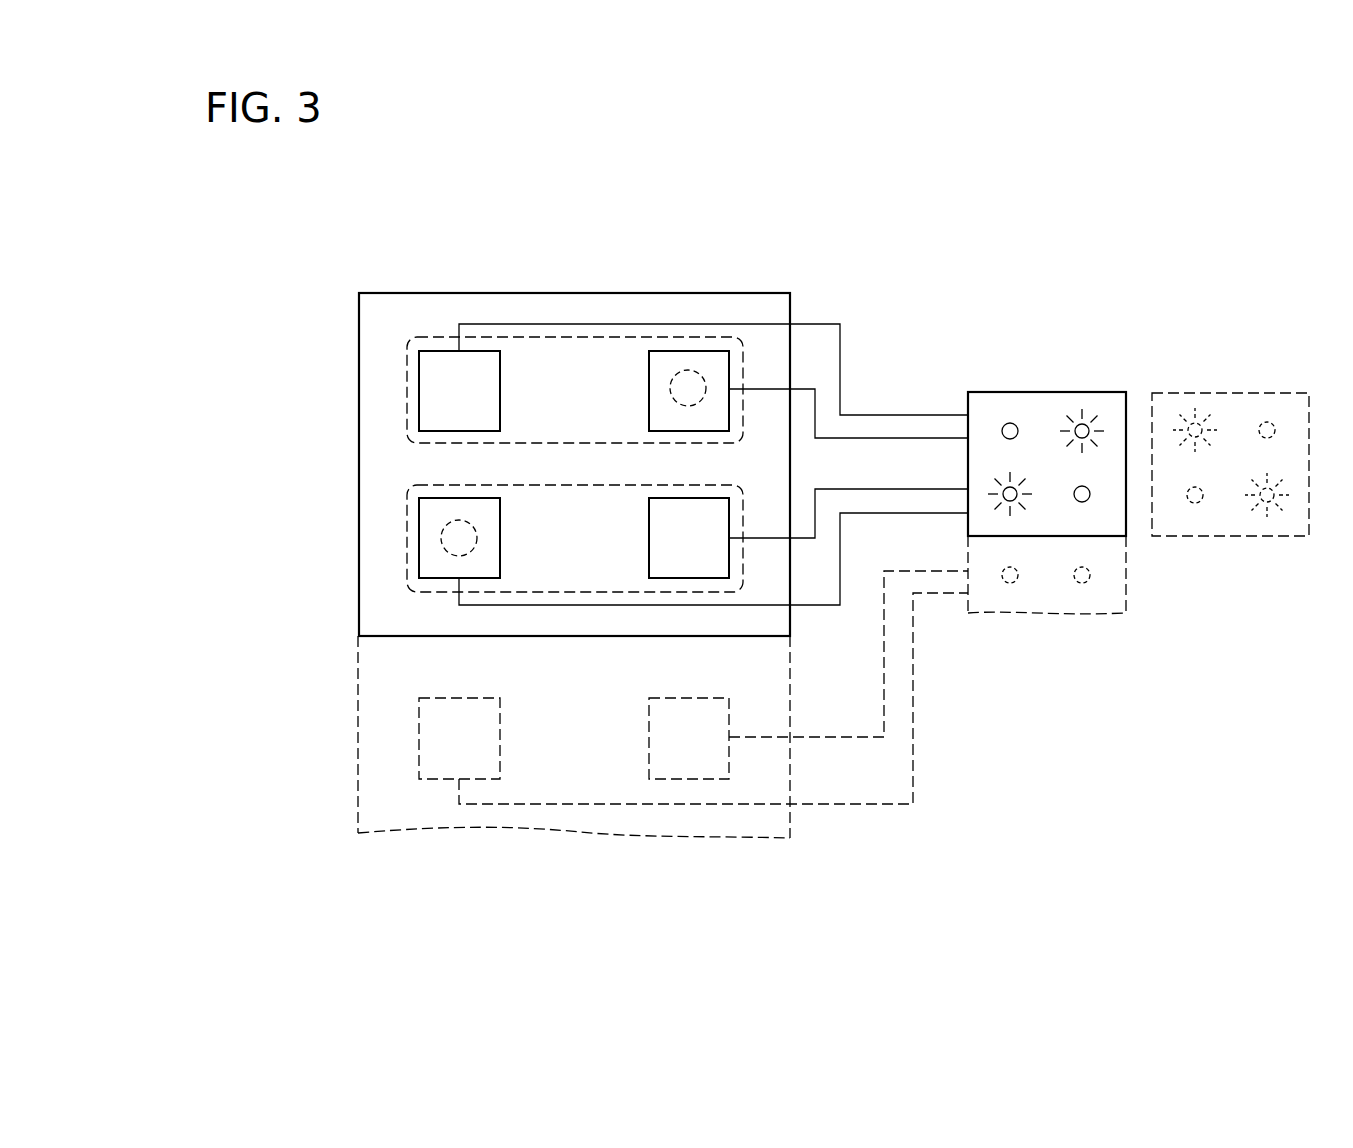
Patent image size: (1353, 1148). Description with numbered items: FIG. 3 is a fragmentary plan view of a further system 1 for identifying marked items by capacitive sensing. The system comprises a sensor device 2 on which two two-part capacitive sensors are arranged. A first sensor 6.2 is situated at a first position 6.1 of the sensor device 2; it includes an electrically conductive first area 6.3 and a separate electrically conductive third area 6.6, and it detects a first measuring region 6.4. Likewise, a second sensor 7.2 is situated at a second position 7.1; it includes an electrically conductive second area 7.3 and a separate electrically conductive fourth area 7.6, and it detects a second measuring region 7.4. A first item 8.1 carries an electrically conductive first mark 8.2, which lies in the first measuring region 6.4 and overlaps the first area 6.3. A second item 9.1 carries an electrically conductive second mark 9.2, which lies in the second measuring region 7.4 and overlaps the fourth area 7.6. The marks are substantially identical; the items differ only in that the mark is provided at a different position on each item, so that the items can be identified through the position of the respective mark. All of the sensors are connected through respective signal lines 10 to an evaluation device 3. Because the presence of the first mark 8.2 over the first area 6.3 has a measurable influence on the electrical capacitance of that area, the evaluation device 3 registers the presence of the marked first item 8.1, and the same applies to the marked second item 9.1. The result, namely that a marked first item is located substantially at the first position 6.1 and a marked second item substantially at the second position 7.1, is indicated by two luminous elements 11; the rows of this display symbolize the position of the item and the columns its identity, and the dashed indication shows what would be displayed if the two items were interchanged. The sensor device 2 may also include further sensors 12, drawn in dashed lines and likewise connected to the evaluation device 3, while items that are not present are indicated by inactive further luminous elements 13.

The sensor system 1 is at (1172, 253).
The sensor device 2 is at (790, 312).
The evaluation device 3 is at (1227, 400).
The first position 6.1 is at (443, 288).
The first sensor 6.2 is at (443, 288).
The first area 6.3 is at (419, 390).
The first measuring region 6.4 is at (443, 288).
The third area 6.6 is at (649, 368).
The second position 7.1 is at (582, 628).
The second sensor 7.2 is at (582, 628).
The second area 7.3 is at (419, 522).
The second measuring region 7.4 is at (582, 628).
The fourth area 7.6 is at (715, 568).
The first item 8.1 is at (669, 338).
The first mark 8.2 is at (703, 377).
The second item 9.1 is at (408, 537).
The second mark 9.2 is at (442, 553).
The signal lines 10 is at (934, 513).
The luminous elements 11 is at (1074, 487).
The further sensors 12 is at (683, 737).
The further luminous elements 13 is at (1082, 583).